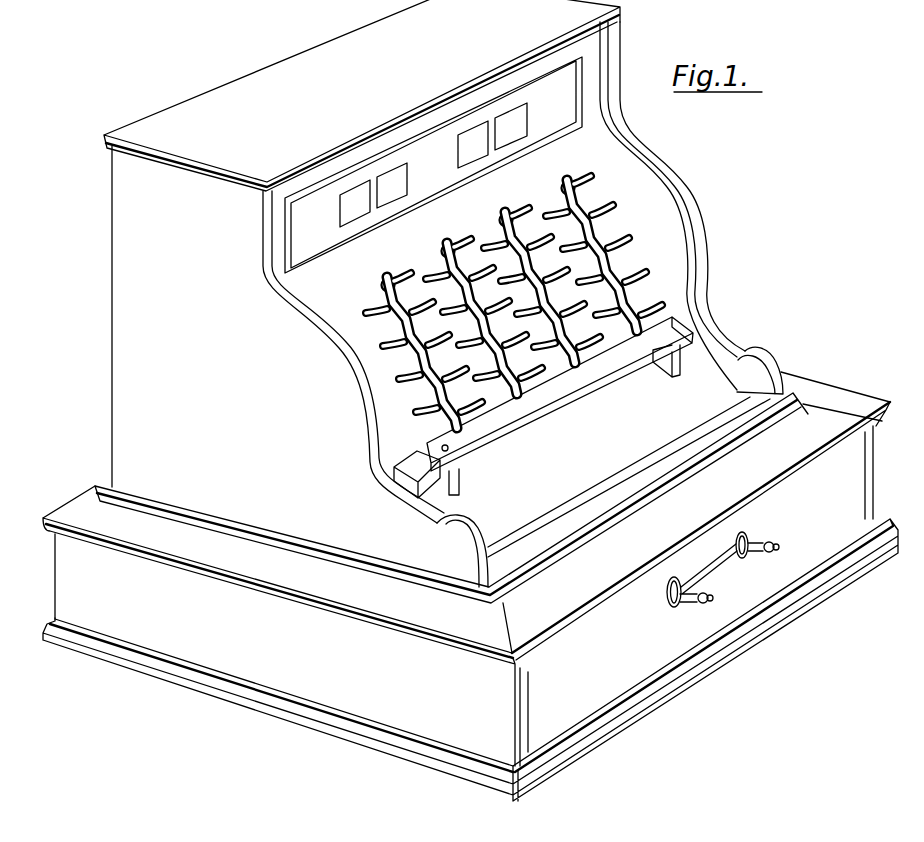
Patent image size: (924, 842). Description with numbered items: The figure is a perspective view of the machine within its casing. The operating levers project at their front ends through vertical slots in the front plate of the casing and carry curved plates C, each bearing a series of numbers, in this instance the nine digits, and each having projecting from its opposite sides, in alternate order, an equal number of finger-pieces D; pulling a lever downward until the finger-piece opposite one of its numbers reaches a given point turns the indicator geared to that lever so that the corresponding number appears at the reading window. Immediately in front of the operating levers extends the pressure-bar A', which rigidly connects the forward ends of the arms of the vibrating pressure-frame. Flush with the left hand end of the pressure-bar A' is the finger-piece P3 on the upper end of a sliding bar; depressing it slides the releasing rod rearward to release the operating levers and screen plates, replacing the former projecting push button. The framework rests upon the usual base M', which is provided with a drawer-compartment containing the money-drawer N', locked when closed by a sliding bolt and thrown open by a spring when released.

The curved plates C is at (615, 242).
The finger-pieces D is at (641, 288).
The pressure-bar A' is at (560, 406).
The finger-piece P3 is at (404, 459).
The base M' is at (470, 586).
The money-drawer N' is at (653, 642).